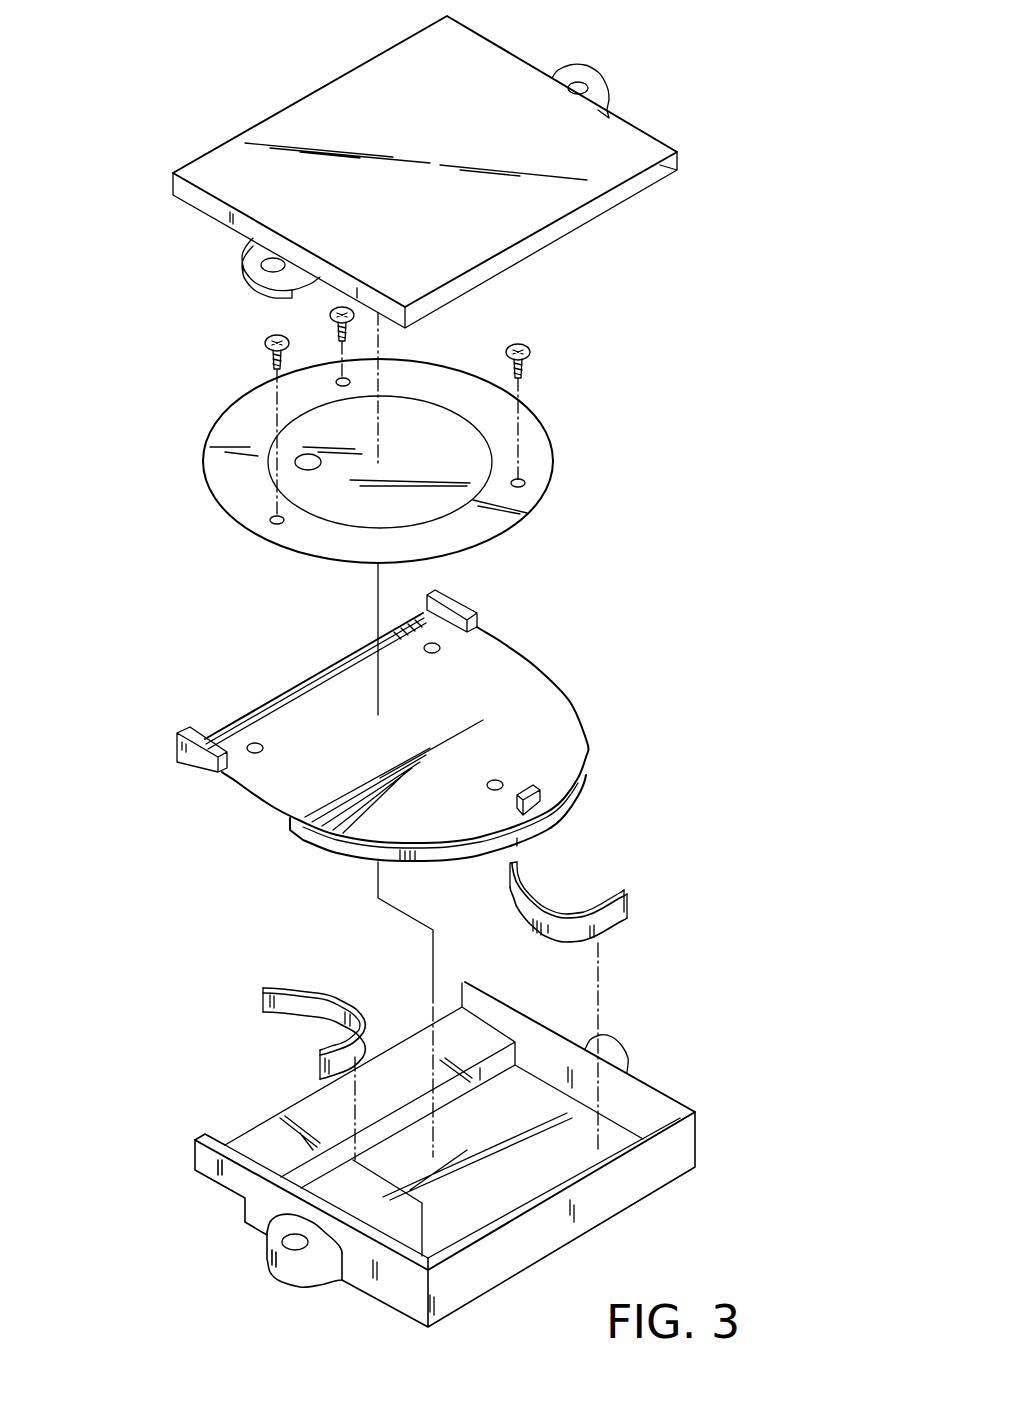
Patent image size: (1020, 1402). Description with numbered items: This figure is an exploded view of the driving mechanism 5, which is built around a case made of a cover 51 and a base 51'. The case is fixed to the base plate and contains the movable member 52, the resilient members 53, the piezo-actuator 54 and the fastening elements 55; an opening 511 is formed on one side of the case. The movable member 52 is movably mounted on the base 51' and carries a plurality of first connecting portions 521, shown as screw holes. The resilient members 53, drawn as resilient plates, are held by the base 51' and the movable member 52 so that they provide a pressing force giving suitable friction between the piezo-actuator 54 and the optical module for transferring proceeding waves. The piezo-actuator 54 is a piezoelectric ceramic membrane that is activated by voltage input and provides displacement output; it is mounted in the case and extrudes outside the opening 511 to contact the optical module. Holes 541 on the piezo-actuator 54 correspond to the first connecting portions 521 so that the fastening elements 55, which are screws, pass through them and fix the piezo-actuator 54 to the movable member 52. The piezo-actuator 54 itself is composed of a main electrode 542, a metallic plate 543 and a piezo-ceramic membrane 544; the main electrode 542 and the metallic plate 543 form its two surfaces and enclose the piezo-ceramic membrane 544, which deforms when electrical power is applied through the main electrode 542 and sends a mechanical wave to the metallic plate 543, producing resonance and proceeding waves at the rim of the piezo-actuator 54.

The driving mechanism 5 is at (188, 342).
The cover 51 is at (425, 172).
The base 51' is at (467, 1154).
The opening 511 is at (256, 1114).
The movable member 52 is at (548, 720).
The first connecting portions 521 is at (505, 782).
The resilient members 53 is at (608, 917).
The piezo-actuator 54 is at (543, 447).
The holes 541 is at (527, 485).
The main electrode 542 is at (308, 470).
The metallic plate 543 is at (342, 547).
The piezo-ceramic membrane 544 is at (318, 417).
The fastening elements 55 is at (531, 350).